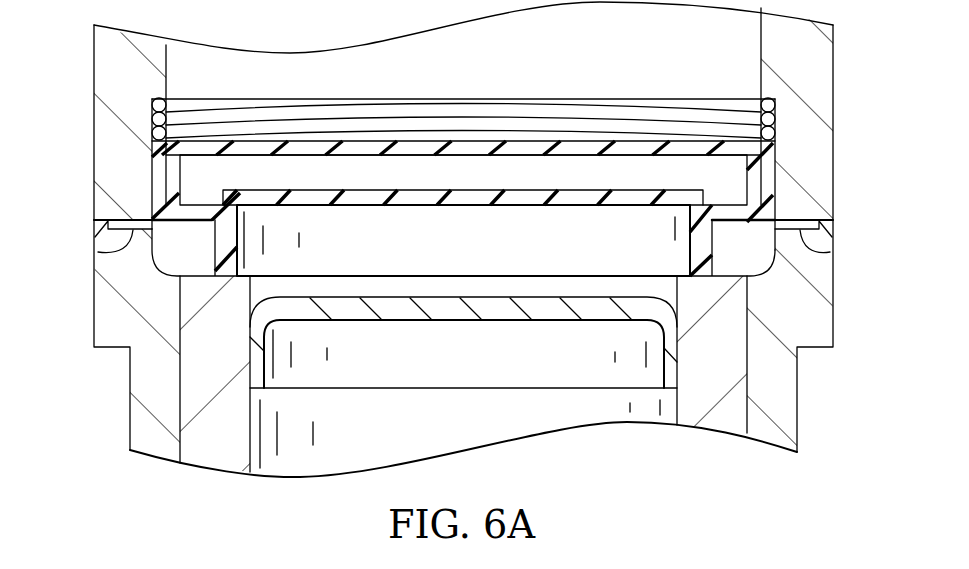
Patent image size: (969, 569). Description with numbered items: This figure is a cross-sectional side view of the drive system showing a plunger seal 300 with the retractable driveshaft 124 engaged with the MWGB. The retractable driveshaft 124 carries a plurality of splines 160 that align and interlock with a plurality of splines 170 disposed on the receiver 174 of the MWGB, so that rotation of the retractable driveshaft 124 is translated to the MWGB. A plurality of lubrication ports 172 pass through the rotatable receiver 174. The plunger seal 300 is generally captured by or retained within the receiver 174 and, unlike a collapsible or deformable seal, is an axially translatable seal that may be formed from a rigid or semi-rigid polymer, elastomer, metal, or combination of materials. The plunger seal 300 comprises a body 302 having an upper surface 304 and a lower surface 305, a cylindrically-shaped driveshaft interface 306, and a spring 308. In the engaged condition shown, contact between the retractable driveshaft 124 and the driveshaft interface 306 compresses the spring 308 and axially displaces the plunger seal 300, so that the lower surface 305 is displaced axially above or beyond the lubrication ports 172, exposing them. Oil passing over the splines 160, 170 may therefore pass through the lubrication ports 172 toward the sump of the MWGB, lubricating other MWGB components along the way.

The retractable driveshaft 124 is at (692, 414).
The splines 160 is at (747, 422).
The splines 170 is at (740, 288).
The lubrication ports 172 is at (100, 252).
The receiver 174 is at (761, 52).
The plunger seal 300 is at (525, 128).
The body 302 is at (590, 148).
The upper surface 304 is at (468, 140).
The lower surface 305 is at (742, 222).
The driveshaft interface 306 is at (700, 262).
The spring 308 is at (165, 117).